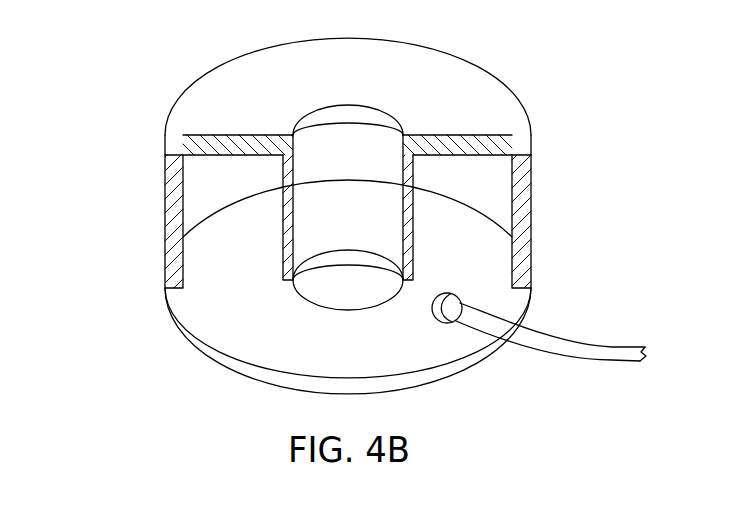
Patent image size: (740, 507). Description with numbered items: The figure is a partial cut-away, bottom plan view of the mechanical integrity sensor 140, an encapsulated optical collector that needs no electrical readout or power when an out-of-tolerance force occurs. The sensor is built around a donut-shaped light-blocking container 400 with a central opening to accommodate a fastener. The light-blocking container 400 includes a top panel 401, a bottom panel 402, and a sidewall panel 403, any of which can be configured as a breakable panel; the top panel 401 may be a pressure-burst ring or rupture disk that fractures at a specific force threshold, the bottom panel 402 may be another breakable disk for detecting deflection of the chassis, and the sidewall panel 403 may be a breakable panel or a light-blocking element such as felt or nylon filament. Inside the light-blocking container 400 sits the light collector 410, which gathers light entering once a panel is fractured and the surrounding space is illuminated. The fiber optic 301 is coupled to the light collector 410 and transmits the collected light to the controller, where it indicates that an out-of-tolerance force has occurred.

The mechanical integrity sensor 140 is at (142, 103).
The light-blocking container 400 is at (163, 207).
The top panel 401 is at (200, 345).
The bottom panel 402 is at (525, 107).
The sidewall panel 403 is at (531, 199).
The light collector 410 is at (447, 323).
The fiber optic 301 is at (620, 352).